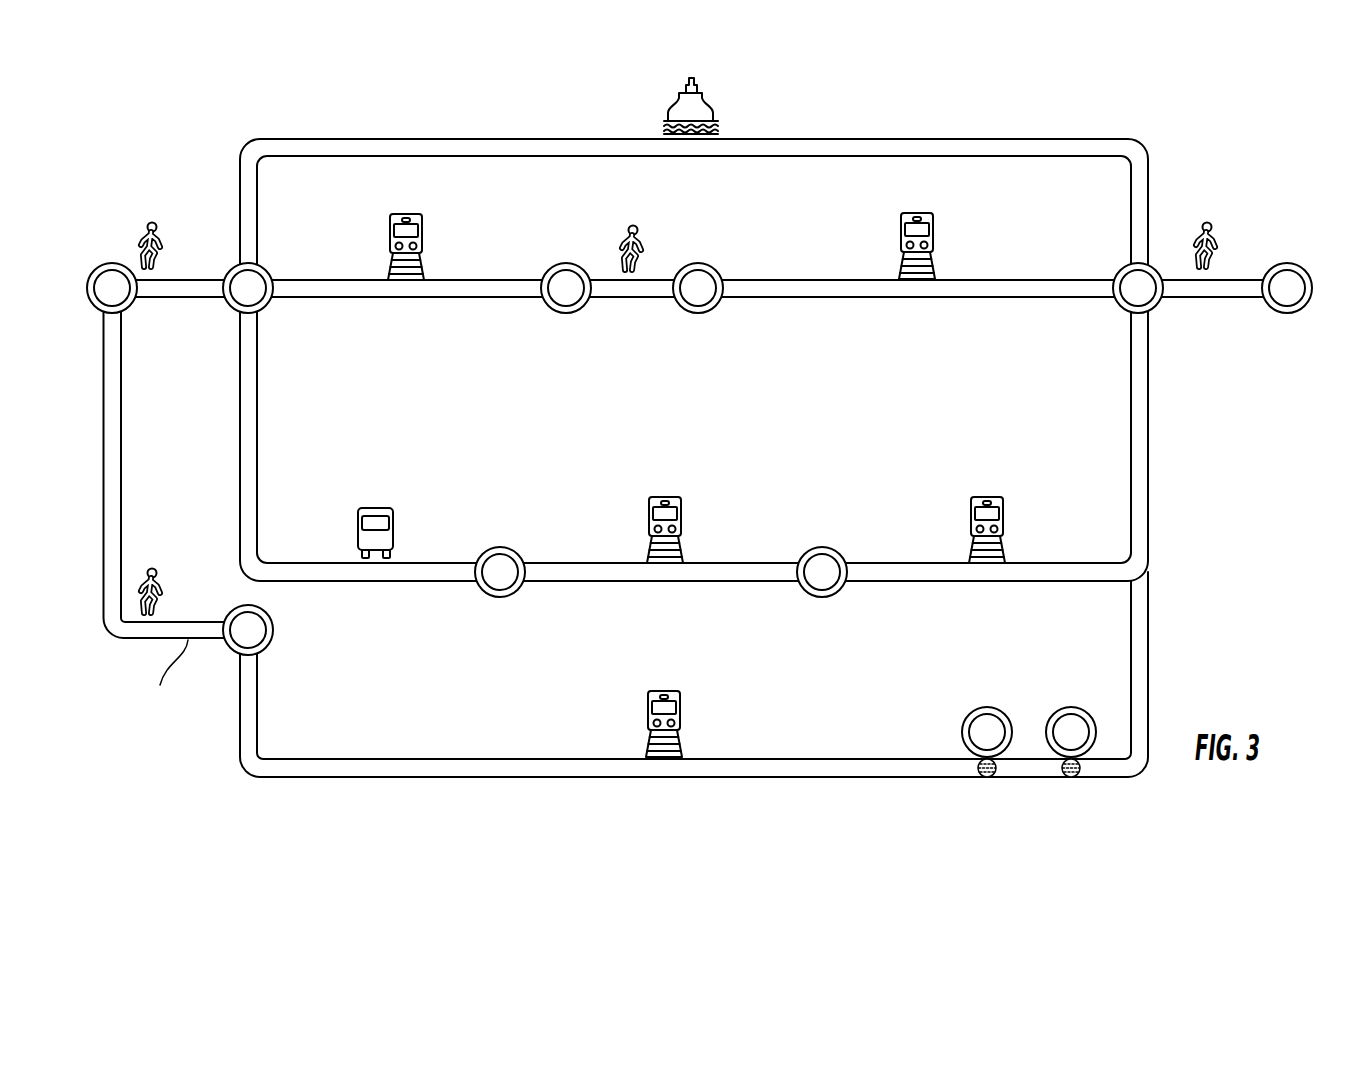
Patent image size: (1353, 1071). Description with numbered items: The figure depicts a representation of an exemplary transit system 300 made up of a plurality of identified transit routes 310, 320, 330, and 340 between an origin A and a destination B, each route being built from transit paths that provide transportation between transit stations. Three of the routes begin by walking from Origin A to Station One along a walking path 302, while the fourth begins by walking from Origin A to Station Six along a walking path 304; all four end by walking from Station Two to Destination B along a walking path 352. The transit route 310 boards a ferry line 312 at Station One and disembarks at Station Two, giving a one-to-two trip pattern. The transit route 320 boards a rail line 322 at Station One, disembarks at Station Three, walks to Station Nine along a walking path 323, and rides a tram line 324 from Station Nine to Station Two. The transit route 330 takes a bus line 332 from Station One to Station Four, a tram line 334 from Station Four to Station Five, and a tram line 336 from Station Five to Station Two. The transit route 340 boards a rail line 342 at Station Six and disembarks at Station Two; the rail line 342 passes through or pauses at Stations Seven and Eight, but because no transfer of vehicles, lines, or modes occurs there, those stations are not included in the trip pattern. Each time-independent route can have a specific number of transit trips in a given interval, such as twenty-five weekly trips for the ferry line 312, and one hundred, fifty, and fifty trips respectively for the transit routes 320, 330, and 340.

The transit system 300 is at (994, 100).
The walking path 302 is at (167, 280).
The walking path 304 is at (122, 480).
The transit route 310 is at (315, 77).
The ferry line 312 is at (505, 137).
The transit route 320 is at (313, 220).
The rail line 322 is at (475, 280).
The walking path 323 is at (655, 278).
The tram line 324 is at (783, 278).
The transit route 330 is at (313, 503).
The bus line 332 is at (427, 562).
The tram line 334 is at (738, 562).
The tram line 336 is at (1042, 562).
The transit route 340 is at (313, 698).
The rail line 342 is at (427, 758).
The walking path 352 is at (1234, 280).